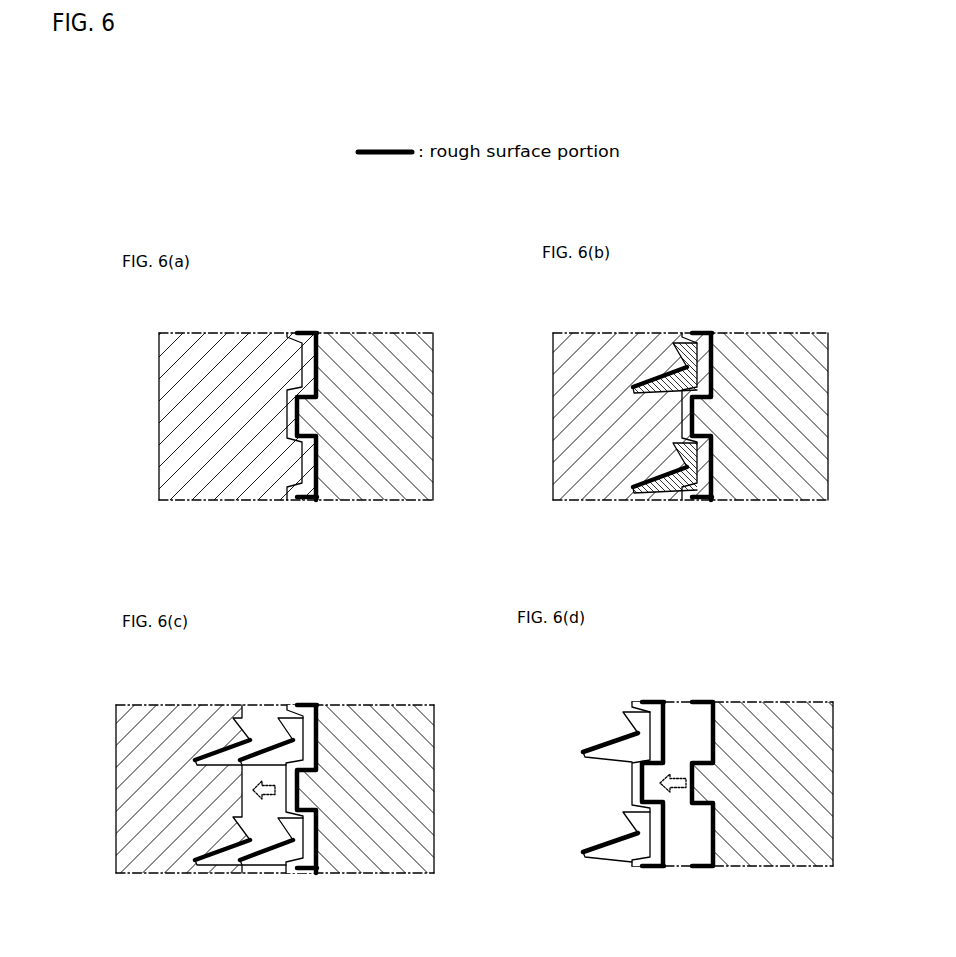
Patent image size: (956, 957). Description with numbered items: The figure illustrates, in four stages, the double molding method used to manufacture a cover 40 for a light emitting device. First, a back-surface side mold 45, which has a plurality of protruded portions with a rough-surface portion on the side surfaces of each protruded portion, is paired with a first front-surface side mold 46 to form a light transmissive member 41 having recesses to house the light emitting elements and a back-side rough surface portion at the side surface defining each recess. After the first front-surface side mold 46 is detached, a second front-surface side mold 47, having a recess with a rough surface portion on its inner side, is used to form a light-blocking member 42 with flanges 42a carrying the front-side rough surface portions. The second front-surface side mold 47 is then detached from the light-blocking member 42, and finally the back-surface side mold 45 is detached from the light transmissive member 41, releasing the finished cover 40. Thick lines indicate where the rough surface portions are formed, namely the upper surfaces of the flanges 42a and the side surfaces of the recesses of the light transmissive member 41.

The cover 40 is at (476, 562).
The light transmissive member 41 is at (308, 342).
The light-blocking member 42 is at (468, 574).
The flange 42a is at (621, 734).
The back-surface side mold 45 is at (373, 350).
The first front-surface side mold 46 is at (220, 347).
The second front-surface side mold 47 is at (610, 347).